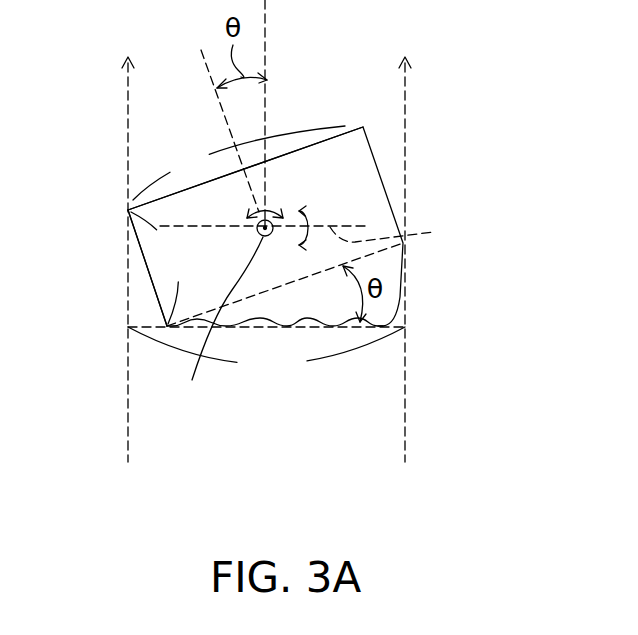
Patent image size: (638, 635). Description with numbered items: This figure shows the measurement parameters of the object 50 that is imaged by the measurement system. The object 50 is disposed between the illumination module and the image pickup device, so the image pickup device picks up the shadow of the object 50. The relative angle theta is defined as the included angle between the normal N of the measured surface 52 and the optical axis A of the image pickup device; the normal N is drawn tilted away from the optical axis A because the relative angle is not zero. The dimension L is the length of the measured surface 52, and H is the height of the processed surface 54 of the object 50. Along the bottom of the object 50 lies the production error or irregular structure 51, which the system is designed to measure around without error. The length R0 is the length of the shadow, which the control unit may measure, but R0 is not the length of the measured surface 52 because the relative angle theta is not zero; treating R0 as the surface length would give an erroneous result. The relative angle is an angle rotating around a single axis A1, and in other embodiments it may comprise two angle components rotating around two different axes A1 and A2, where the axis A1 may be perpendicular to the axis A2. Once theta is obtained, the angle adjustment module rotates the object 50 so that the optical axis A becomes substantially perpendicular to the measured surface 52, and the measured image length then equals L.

The object 50 is at (363, 172).
The irregular structure 51 is at (340, 327).
The measured surface 52 is at (306, 144).
The processed surface 54 is at (151, 278).
The optical axis A is at (267, 44).
The axis A1 is at (218, 325).
The axis A2 is at (402, 235).
The normal line N is at (223, 115).
The length of the measured surface L is at (239, 163).
The height of the processed surface H is at (155, 268).
The length of the shadow R0 is at (266, 355).